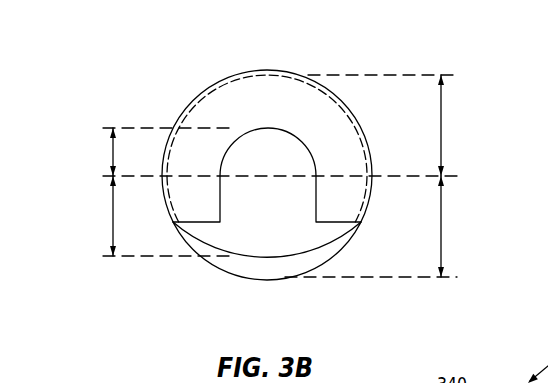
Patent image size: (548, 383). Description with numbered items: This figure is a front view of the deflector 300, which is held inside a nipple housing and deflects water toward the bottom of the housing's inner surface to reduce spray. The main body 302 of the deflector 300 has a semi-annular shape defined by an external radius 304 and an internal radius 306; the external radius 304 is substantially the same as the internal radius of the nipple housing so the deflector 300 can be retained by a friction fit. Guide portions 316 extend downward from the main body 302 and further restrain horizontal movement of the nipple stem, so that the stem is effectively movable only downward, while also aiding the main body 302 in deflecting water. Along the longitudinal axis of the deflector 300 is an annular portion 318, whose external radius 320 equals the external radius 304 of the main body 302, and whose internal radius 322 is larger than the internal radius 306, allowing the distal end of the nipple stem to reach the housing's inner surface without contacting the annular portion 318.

The deflector 300 is at (150, 55).
The main body 302 is at (279, 100).
The external radius 304 is at (441, 122).
The internal radius 306 is at (113, 152).
The guide portions 316 is at (208, 213).
The annular portion 318 is at (232, 260).
The external radius 320 is at (441, 230).
The internal radius 322 is at (113, 210).